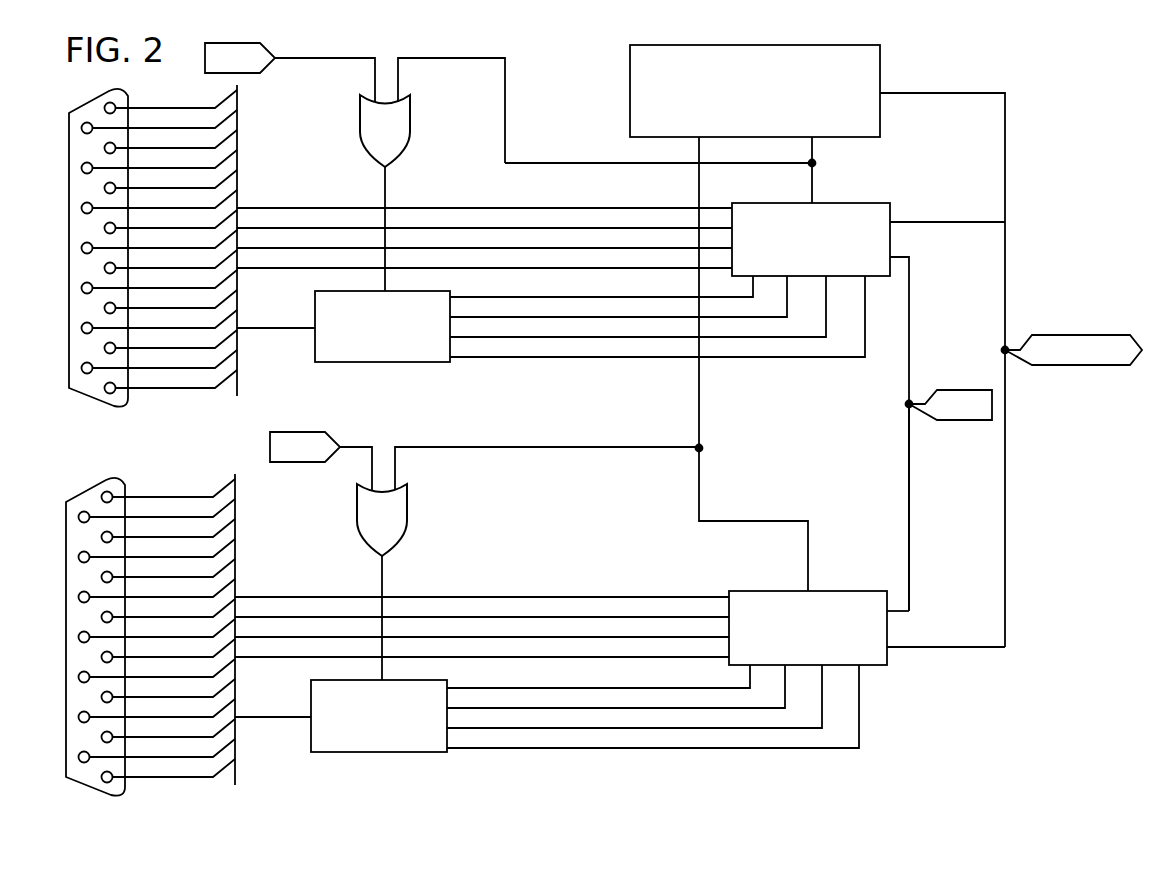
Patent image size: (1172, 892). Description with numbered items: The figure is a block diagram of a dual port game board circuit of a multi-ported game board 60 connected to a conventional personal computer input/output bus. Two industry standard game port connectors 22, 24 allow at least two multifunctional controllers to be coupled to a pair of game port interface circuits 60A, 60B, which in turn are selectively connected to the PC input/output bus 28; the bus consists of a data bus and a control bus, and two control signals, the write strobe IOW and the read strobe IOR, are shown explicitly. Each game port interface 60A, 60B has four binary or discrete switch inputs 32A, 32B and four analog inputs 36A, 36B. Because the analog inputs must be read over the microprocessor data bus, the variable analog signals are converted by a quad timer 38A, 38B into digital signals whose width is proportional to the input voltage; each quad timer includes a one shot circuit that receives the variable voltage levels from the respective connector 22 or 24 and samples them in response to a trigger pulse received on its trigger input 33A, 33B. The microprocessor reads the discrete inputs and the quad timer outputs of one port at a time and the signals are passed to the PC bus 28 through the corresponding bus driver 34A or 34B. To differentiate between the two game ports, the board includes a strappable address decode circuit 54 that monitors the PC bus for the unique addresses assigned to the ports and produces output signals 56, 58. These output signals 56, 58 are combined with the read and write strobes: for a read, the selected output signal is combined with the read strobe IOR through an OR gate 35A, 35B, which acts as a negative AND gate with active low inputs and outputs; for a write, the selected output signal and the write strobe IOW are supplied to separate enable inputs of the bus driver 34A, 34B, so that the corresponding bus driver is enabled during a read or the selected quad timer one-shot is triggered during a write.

The game port connector 22 is at (95, 100).
The game port connector 24 is at (92, 489).
The PC input/output bus 28 is at (1075, 335).
The switch inputs 32A is at (327, 267).
The switch inputs 32B is at (325, 656).
The trigger input 33A is at (405, 288).
The trigger input 33B is at (383, 680).
The bus driver 34A is at (860, 203).
The bus driver 34B is at (840, 591).
The OR gate 35A is at (358, 127).
The OR gate 35B is at (356, 518).
The analog inputs 36A is at (268, 330).
The analog inputs 36B is at (265, 719).
The quad timer 38A is at (372, 362).
The quad timer 38B is at (372, 752).
The address decode circuit 54 is at (882, 68).
The output signal 56 is at (703, 163).
The output signal 58 is at (815, 150).
The multi-ported game board 60 is at (936, 704).
The game port interface circuit 60A is at (558, 90).
The game port interface circuit 60B is at (662, 777).